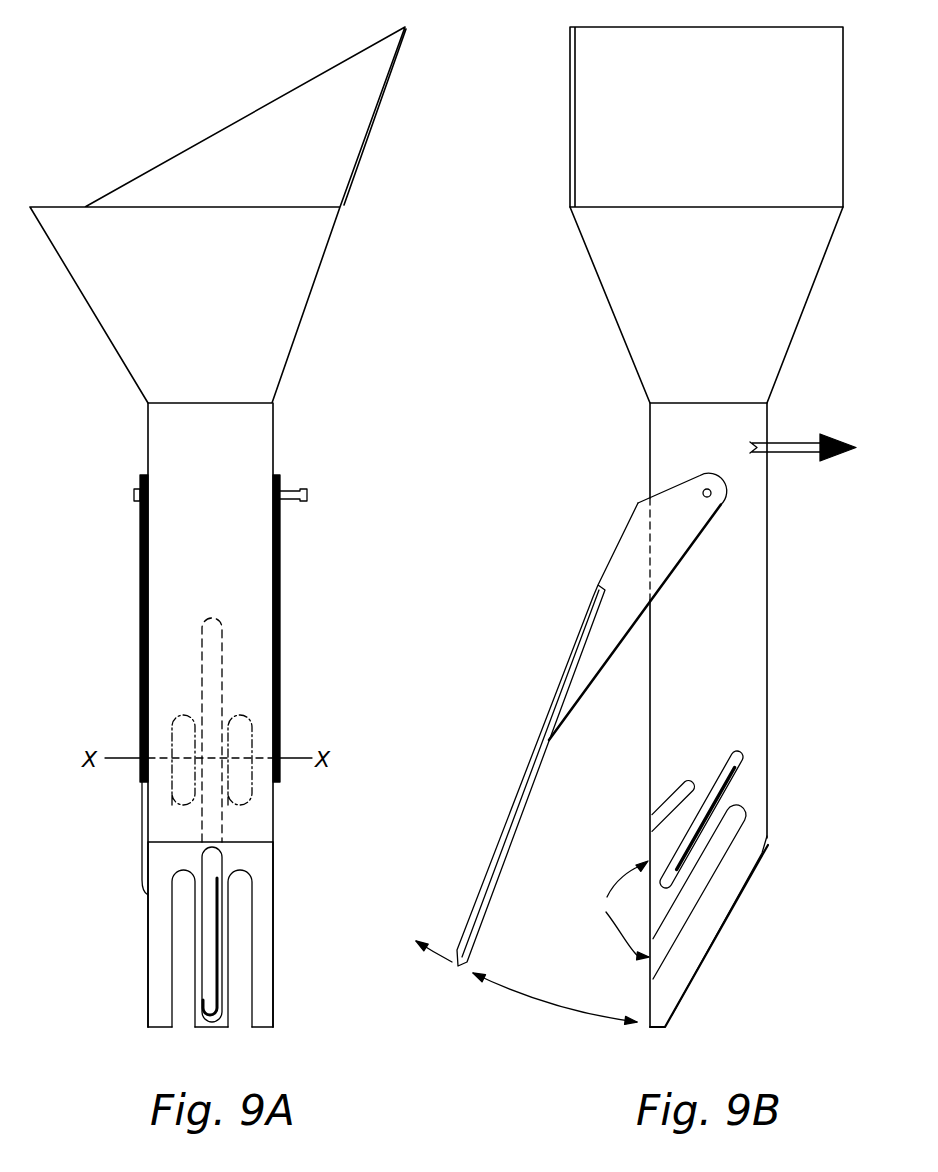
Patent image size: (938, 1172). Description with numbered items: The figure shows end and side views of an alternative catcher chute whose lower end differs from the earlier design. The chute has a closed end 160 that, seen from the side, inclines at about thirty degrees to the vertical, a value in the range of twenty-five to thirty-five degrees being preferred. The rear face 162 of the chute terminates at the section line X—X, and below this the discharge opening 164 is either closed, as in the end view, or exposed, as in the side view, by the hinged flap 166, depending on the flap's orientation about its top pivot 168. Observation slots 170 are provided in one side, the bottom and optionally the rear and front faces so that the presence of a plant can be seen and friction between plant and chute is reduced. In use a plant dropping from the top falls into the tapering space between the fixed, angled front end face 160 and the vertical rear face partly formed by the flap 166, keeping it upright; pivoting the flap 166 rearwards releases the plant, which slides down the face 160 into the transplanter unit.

In FIG. 9A, the closed end 160 is at (262, 935).
In FIG. 9B, the closed end 160 is at (725, 920).
In FIG. 9B, the rear face 162 is at (650, 458).
In FIG. 9B, the discharge opening 164 is at (604, 910).
In FIG. 9A, the hinged flap 166 is at (183, 950).
In FIG. 9B, the hinged flap 166 is at (545, 780).
In FIG. 9B, the top pivot 168 is at (707, 489).
In FIG. 9A, the slots 170 is at (178, 996).
In FIG. 9B, the slots 170 is at (680, 796).